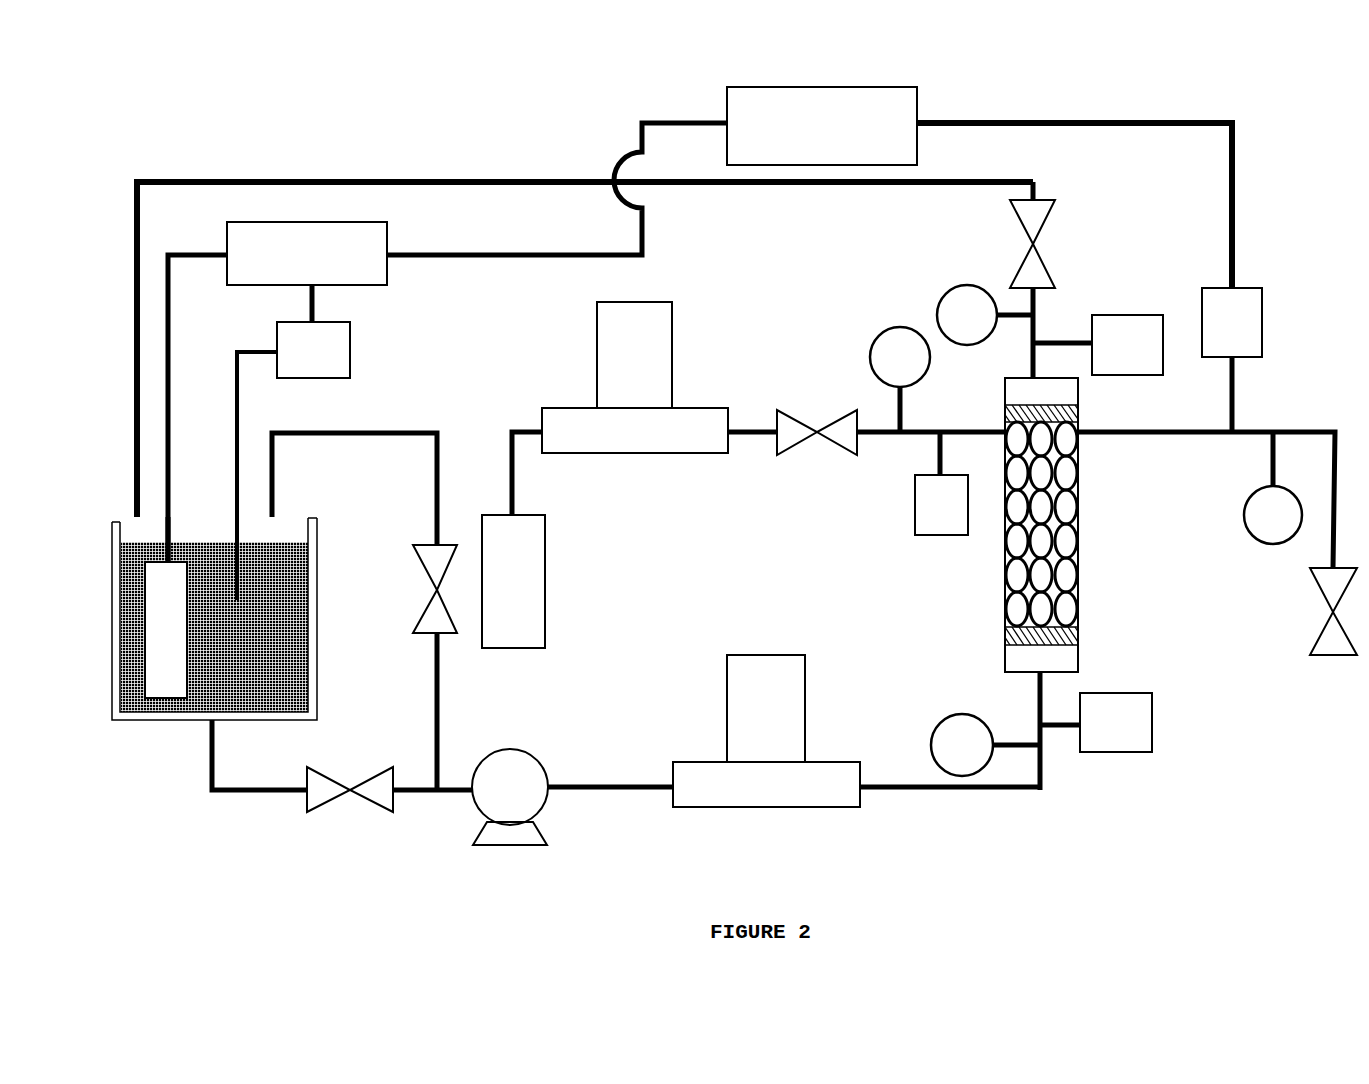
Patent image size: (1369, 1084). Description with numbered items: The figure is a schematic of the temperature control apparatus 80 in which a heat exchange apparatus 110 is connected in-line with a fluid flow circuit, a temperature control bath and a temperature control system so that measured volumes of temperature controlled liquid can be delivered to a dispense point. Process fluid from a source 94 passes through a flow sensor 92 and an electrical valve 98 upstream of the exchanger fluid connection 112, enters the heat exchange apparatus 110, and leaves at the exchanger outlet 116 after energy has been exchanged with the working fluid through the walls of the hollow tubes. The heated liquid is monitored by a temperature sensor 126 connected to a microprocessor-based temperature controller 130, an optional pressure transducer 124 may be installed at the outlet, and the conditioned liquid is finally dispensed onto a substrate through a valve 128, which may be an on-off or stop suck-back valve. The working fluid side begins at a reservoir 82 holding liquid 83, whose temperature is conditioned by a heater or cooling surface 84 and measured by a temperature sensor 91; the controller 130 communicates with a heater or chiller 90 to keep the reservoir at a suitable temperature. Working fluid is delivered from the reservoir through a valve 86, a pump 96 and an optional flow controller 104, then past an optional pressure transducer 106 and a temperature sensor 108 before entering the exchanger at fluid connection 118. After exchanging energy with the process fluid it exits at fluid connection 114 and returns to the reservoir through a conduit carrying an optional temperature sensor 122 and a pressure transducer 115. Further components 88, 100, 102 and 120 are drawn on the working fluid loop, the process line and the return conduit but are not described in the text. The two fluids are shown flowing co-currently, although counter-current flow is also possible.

The fluid processing system 80 is at (285, 180).
The reservoir 82 is at (118, 515).
The liquid 83 is at (295, 643).
The heater or cooling surface 84 is at (158, 662).
The valve 86 is at (330, 808).
The return valve 88 is at (430, 592).
The heater or chiller 90 is at (353, 222).
The temperature sensor 91 is at (320, 380).
The flow sensor 92 is at (617, 305).
The process fluid source 94 is at (547, 602).
The pump 96 is at (518, 750).
The electrical valve 98 is at (845, 432).
The pressure gauge 100 is at (858, 355).
The sensor 102 is at (925, 492).
The flow controller 104 is at (762, 654).
The pressure transducer 106 is at (950, 737).
The temperature sensor 108 is at (1118, 752).
The heat exchange apparatus 110 is at (1003, 545).
The exchanger fluid connection 112 is at (992, 430).
The fluid connection 114 is at (1028, 372).
The pressure transducer 115 is at (958, 290).
The exchanger outlet 116 is at (1082, 442).
The fluid connection 118 is at (1045, 695).
The valve 120 is at (1017, 217).
The temperature sensor 122 is at (1120, 315).
The pressure transducer 124 is at (1260, 538).
The temperature sensor 126 is at (1240, 288).
The valve 128 is at (1333, 658).
The temperature controller 130 is at (923, 140).